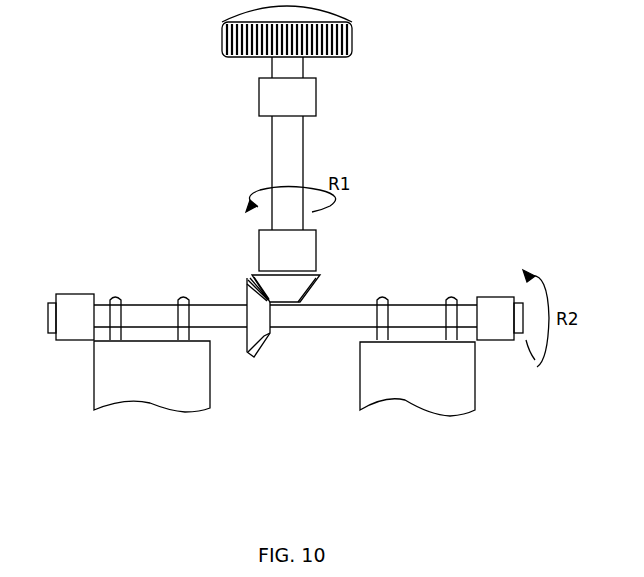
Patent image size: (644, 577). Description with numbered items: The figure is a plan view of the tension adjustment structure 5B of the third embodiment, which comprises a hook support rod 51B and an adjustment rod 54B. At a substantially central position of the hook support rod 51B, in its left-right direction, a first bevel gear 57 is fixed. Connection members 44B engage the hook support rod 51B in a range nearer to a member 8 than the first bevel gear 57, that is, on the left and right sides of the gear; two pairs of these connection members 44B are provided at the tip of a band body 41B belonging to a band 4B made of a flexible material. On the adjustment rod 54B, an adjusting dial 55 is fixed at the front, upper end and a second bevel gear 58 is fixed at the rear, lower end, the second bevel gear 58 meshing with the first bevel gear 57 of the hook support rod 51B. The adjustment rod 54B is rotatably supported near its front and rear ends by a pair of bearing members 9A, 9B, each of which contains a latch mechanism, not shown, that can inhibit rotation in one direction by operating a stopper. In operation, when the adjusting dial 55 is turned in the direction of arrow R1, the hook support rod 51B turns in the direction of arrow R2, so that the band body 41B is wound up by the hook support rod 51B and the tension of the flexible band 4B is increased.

The adjusting dial 55 is at (352, 38).
The tension adjustment structure 5B is at (440, 78).
The adjustment rod 54B is at (303, 152).
The bearing member 9A is at (259, 100).
The bearing member 9B is at (259, 248).
The second bevel gear 58 is at (320, 275).
The first bevel gear 57 is at (256, 344).
The hook support rod 51B is at (222, 305).
The connection members 44B is at (185, 300).
The member 8 is at (72, 340).
The band body 41B is at (393, 402).
The band 4B is at (422, 430).